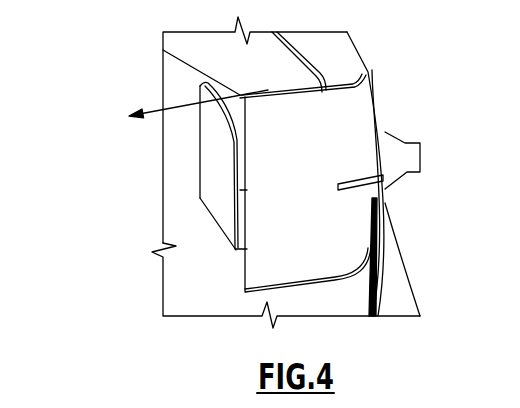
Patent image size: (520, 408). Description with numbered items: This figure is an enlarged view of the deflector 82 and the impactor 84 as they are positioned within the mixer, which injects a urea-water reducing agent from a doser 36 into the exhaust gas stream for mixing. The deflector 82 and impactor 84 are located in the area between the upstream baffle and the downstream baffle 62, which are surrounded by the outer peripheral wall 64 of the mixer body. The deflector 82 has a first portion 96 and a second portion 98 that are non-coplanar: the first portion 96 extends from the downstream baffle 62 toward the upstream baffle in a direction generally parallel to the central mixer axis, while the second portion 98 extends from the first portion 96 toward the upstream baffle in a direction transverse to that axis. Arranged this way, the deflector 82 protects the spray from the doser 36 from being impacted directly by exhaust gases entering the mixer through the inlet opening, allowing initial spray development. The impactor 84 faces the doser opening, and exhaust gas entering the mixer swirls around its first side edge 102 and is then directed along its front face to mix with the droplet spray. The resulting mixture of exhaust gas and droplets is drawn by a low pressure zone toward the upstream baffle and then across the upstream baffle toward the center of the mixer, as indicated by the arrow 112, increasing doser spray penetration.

The doser 36 is at (422, 157).
The downstream baffle 62 is at (213, 292).
The outer peripheral wall 64 is at (366, 75).
The deflector 82 is at (368, 210).
The impactor 84 is at (197, 148).
The first portion 96 is at (318, 262).
The second portion 98 is at (358, 128).
The first side edge 102 is at (200, 182).
The flow direction toward mixer center 112 is at (183, 105).